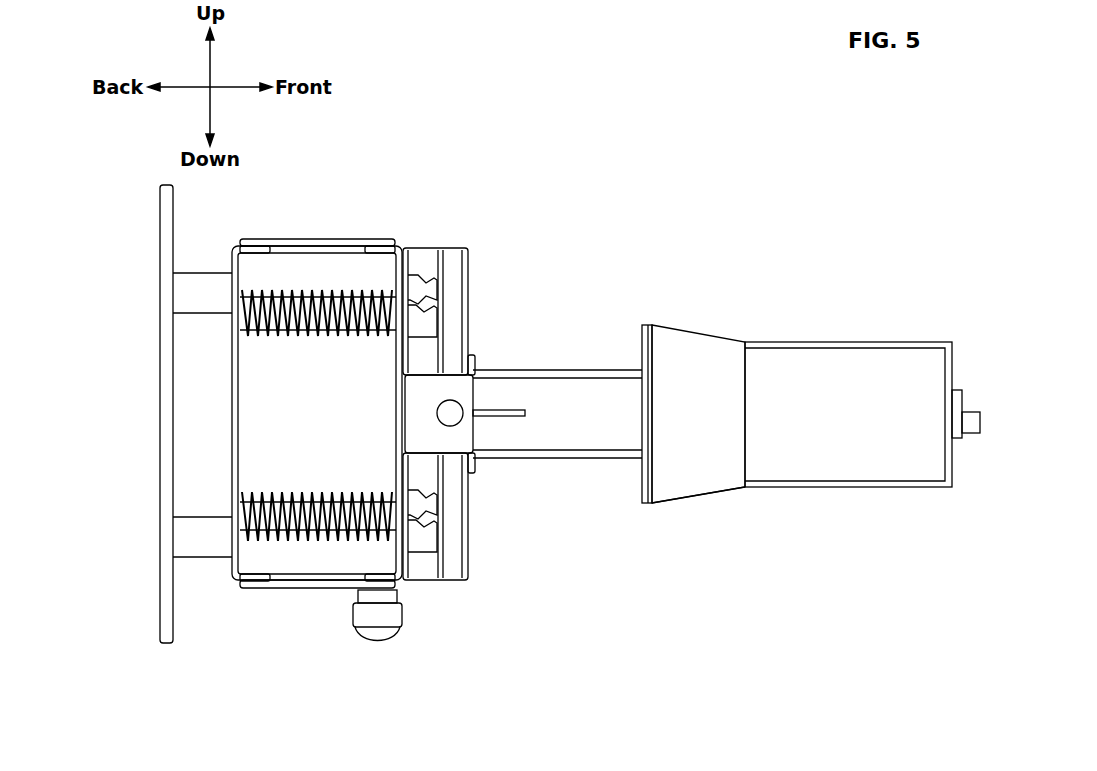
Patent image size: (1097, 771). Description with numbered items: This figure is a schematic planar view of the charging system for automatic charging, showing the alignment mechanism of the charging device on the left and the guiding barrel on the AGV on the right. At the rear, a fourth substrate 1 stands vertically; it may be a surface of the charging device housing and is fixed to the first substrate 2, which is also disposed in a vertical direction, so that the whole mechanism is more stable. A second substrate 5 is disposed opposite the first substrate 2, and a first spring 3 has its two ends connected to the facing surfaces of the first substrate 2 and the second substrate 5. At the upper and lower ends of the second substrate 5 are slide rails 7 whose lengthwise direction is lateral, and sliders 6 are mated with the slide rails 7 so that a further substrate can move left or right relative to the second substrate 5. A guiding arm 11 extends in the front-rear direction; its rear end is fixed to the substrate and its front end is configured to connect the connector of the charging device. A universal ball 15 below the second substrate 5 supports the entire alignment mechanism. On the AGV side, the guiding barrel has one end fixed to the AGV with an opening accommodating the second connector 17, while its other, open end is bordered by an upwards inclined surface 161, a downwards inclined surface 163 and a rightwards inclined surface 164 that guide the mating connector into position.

The fourth substrate 1 is at (170, 228).
The first substrate 2 is at (234, 463).
The first spring 3 is at (322, 307).
The second substrate 5 is at (403, 428).
The slider 6 is at (450, 267).
The slide rail 7 is at (422, 292).
The guiding arm 11 is at (582, 412).
The universal ball 15 is at (375, 615).
The second connector 17 is at (955, 405).
The upwards inclined surface 161 is at (677, 332).
The downwards inclined surface 163 is at (680, 500).
The rightwards inclined surface 164 is at (722, 361).